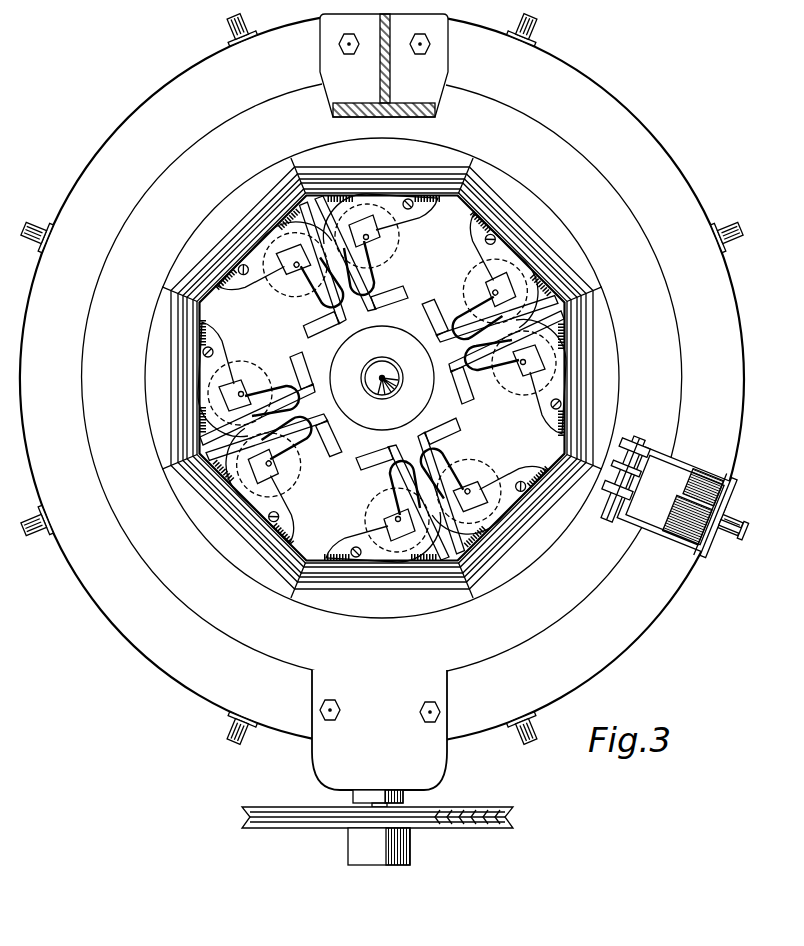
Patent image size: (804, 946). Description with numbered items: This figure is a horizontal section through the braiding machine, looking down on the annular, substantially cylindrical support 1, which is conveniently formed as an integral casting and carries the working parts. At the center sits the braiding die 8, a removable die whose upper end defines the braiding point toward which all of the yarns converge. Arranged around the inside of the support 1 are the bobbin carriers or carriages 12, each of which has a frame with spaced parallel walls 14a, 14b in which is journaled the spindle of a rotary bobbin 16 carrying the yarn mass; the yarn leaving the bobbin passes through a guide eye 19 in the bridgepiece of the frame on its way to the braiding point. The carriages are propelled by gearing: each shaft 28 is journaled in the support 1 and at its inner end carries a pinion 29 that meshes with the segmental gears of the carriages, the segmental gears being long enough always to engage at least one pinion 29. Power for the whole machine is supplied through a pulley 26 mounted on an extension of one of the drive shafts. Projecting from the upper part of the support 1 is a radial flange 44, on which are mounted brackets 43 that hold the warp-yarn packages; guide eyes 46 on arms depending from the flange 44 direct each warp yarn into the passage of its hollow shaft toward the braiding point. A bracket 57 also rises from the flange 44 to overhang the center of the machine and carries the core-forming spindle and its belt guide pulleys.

The annular support 1 is at (277, 577).
The braiding die 8 is at (387, 337).
The bobbin carrier 12 is at (306, 308).
The frame wall 14a is at (258, 272).
The frame wall 14b is at (405, 222).
The rotary bobbin 16 is at (298, 470).
The guide eye 19 is at (432, 423).
The pulley 26 is at (510, 804).
The shaft 28 is at (229, 728).
The pinion 29 is at (323, 553).
The bracket 43 is at (687, 467).
The radial flange 44 is at (656, 619).
The guide eye 46 is at (748, 528).
The bracket 57 is at (386, 92).